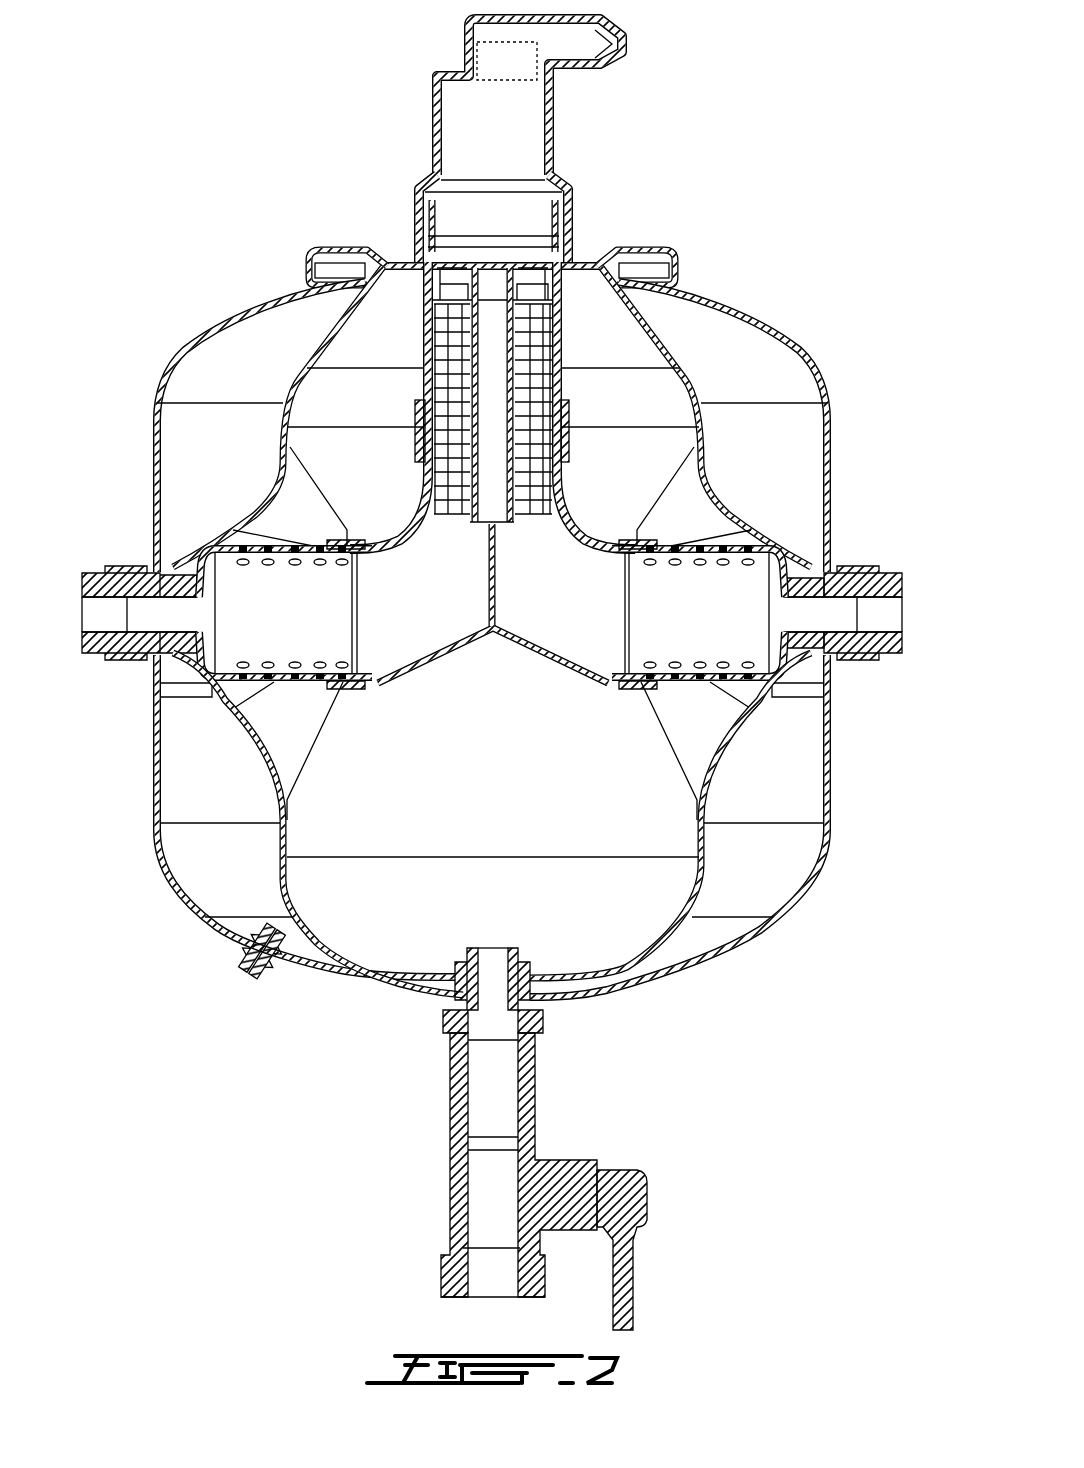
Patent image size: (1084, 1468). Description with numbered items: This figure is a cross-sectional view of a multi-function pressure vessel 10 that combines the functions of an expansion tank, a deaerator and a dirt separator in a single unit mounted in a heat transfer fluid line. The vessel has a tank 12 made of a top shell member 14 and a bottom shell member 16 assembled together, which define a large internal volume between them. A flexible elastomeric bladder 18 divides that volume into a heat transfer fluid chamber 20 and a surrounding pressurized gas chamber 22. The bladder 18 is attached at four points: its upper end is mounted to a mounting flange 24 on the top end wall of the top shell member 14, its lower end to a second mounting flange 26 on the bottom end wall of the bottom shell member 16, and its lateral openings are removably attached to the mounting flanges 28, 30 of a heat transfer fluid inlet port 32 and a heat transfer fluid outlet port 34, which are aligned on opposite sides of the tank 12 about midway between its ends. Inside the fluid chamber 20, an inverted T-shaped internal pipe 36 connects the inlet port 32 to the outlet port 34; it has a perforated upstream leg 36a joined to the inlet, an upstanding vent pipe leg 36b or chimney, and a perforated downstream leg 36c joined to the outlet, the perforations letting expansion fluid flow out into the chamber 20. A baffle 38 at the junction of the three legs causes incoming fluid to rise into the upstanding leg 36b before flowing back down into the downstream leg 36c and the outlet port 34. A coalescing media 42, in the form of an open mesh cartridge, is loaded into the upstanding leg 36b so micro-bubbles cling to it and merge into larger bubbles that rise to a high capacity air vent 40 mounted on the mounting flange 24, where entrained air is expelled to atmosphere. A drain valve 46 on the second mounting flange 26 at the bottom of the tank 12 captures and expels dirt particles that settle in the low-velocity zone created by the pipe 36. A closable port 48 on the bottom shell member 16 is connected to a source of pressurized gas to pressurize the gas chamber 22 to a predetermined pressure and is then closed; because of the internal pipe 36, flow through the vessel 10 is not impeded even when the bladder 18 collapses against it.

The multi-function pressure vessel 10 is at (196, 1022).
The tank 12 is at (806, 903).
The top shell member 14 is at (842, 768).
The bottom shell member 16 is at (838, 441).
The flexible elastomeric bladder 18 is at (710, 840).
The heat transfer fluid chamber 20 is at (600, 910).
The pressurized gas chamber 22 is at (240, 853).
The mounting flange 24 is at (337, 277).
The second mounting flange 26 is at (455, 967).
The mounting flange of inlet port 28 is at (140, 653).
The mounting flange of outlet port 30 is at (850, 573).
The heat transfer fluid inlet port 32 is at (112, 572).
The heat transfer fluid outlet port 34 is at (887, 577).
The internal pipe 36 is at (493, 660).
The upstream leg 36a is at (237, 655).
The upstanding vent pipe leg 36b is at (557, 302).
The downstream leg 36c is at (750, 647).
The baffle 38 is at (495, 572).
The high capacity air vent 40 is at (588, 80).
The coalescing media 42 is at (447, 423).
The drain valve 46 is at (543, 1150).
The closable port 48 is at (276, 982).